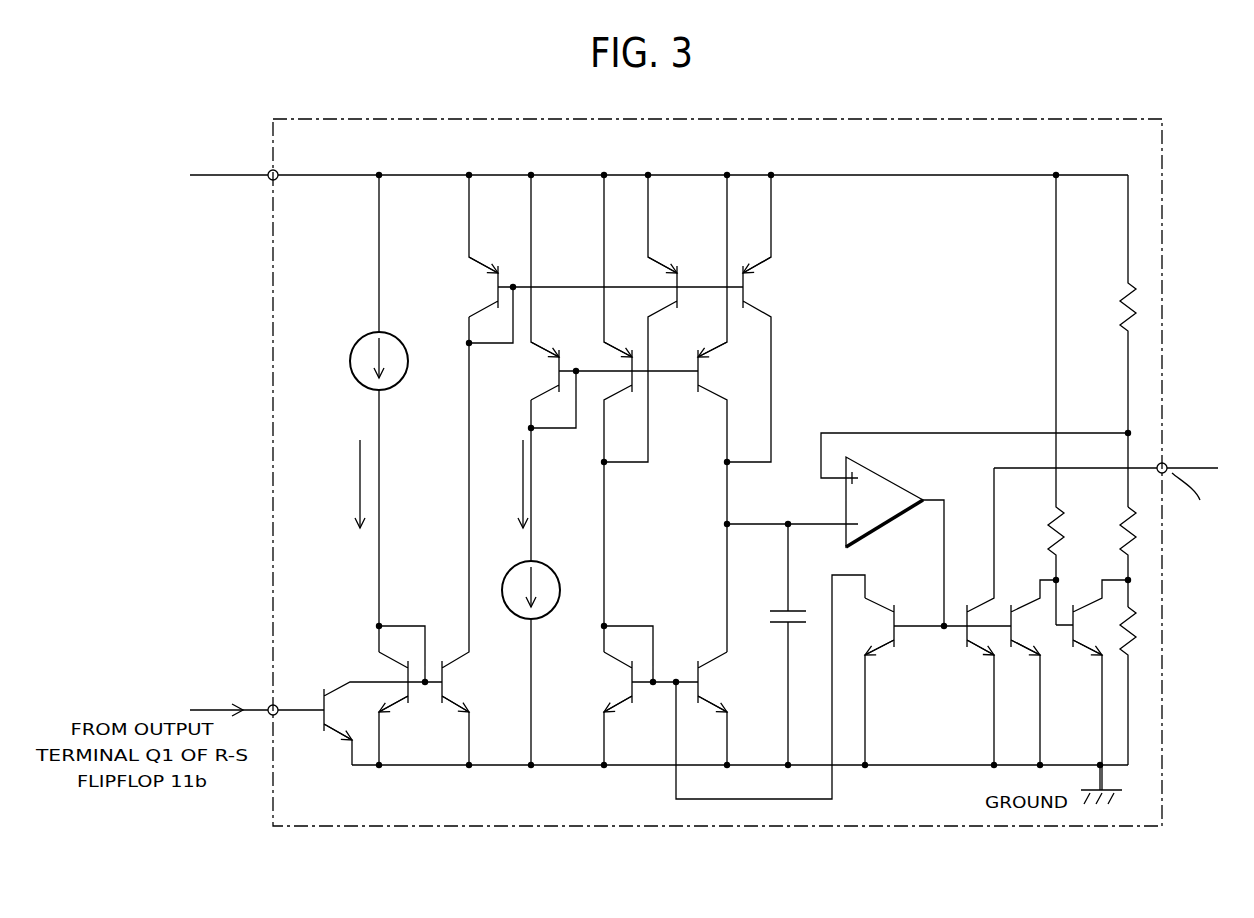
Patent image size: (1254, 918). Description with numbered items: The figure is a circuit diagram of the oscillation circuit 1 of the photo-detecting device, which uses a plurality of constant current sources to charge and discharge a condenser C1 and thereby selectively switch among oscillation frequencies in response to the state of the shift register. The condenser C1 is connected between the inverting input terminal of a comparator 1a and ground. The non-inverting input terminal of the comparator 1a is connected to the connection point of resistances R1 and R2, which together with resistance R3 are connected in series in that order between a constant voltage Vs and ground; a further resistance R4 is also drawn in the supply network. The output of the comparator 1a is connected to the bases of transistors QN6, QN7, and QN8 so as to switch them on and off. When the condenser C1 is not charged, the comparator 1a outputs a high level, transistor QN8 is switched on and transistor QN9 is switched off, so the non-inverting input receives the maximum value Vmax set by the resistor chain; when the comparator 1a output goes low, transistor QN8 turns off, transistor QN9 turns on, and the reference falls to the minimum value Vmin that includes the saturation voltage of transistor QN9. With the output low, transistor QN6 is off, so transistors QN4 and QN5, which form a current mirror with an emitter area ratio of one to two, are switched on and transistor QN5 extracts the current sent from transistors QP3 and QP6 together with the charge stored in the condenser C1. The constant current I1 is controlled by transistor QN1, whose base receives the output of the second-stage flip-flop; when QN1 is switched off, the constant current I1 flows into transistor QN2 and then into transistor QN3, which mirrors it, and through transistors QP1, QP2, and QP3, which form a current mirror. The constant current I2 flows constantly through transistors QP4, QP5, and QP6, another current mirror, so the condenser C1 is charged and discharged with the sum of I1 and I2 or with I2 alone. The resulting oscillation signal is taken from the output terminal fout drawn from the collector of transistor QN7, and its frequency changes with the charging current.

The oscillation circuit 1 is at (867, 118).
The comparator 1a is at (882, 478).
The constant voltage Vs is at (219, 172).
The output terminal fout is at (1168, 464).
The constant current I1 is at (369, 413).
The constant current I2 is at (525, 582).
The transistor QP1 is at (480, 265).
The transistor QP2 is at (660, 262).
The transistor QP3 is at (752, 268).
The transistor QP4 is at (552, 391).
The transistor QP5 is at (627, 360).
The transistor QP6 is at (693, 382).
The transistor QN1 is at (325, 725).
The transistor QN2 is at (392, 660).
The transistor QN3 is at (452, 668).
The transistor QN4 is at (598, 666).
The transistor QN5 is at (717, 658).
The transistor QN6 is at (880, 602).
The transistor QN7 is at (976, 644).
The transistor QN8 is at (1030, 600).
The transistor QN9 is at (1097, 600).
The resistance R1 is at (1125, 287).
The resistance R2 is at (1122, 517).
The resistance R3 is at (1137, 608).
The resistor R4 is at (1050, 517).
The condenser C1 is at (777, 608).